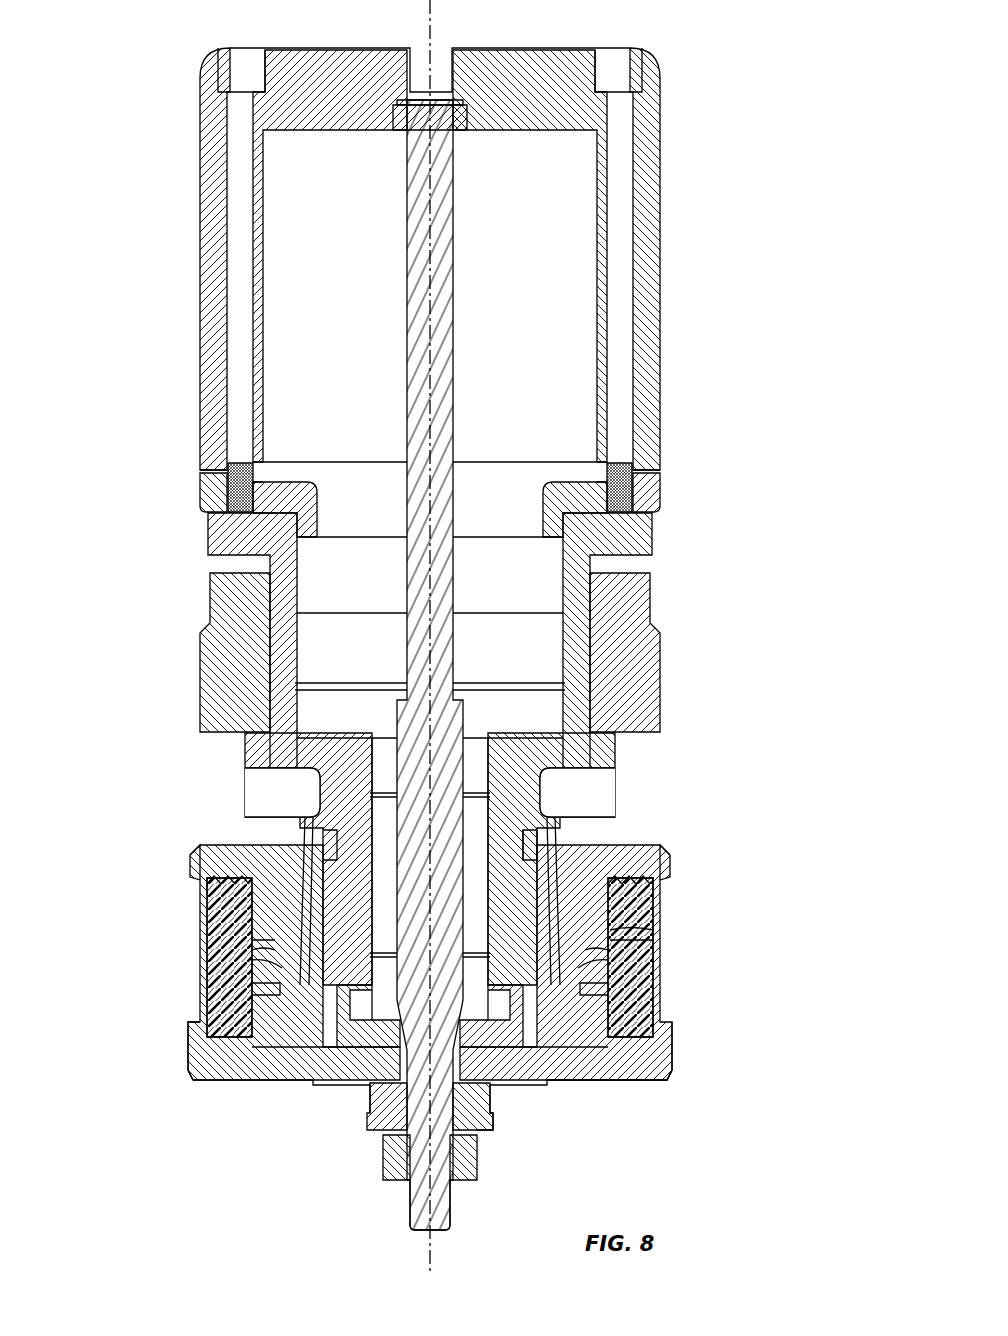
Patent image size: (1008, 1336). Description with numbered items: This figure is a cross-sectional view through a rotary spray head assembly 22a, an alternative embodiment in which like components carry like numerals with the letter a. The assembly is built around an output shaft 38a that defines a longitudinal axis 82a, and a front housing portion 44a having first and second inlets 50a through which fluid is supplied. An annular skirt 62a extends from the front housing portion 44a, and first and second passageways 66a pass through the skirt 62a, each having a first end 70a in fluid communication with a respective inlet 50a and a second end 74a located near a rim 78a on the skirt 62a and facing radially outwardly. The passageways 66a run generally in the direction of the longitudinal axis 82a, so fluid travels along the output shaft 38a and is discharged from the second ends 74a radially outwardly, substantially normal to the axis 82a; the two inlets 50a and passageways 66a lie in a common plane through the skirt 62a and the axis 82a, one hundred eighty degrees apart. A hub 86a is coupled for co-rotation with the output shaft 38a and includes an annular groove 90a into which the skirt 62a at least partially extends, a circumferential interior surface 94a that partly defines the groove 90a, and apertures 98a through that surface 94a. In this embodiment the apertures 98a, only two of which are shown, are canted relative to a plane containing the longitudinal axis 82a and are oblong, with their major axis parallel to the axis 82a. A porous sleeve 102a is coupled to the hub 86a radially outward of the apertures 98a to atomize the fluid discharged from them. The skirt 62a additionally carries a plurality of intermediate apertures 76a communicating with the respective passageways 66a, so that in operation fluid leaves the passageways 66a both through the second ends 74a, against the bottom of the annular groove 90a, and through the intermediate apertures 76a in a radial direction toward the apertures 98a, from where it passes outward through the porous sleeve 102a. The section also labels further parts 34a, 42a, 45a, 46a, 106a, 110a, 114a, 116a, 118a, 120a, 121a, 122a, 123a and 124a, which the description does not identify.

The rotary spray head assembly 22a is at (760, 160).
The actuator 34a is at (733, 336).
The output shaft 38a is at (440, 592).
The retainer assembly 42a is at (652, 545).
The front housing portion 44a is at (580, 665).
The retaining ring 45a is at (208, 495).
The housing 46a is at (200, 262).
The inlets 50a is at (300, 803).
The annular skirt 62a is at (287, 840).
The passageways 66a is at (205, 881).
The first end 70a is at (305, 797).
The second ends 74a is at (252, 962).
The intermediate apertures 76a is at (252, 948).
The rim 78a is at (225, 1075).
The longitudinal axis 82a is at (440, 290).
The hub 86a is at (793, 846).
The annular groove 90a is at (615, 1080).
The circumferential interior surface 94a is at (245, 918).
The apertures 98a is at (210, 988).
The porous sleeve 102a is at (640, 922).
The upper edge 106a is at (190, 855).
The lower edge 110a is at (188, 1055).
The step 114a is at (348, 1105).
The cup 116a is at (290, 1075).
The chamfer 118a is at (662, 850).
The shoulder 120a is at (495, 1120).
The nut 121a is at (385, 1137).
The slot 122a is at (580, 812).
The boss 123a is at (520, 1082).
The tip 124a is at (470, 1165).